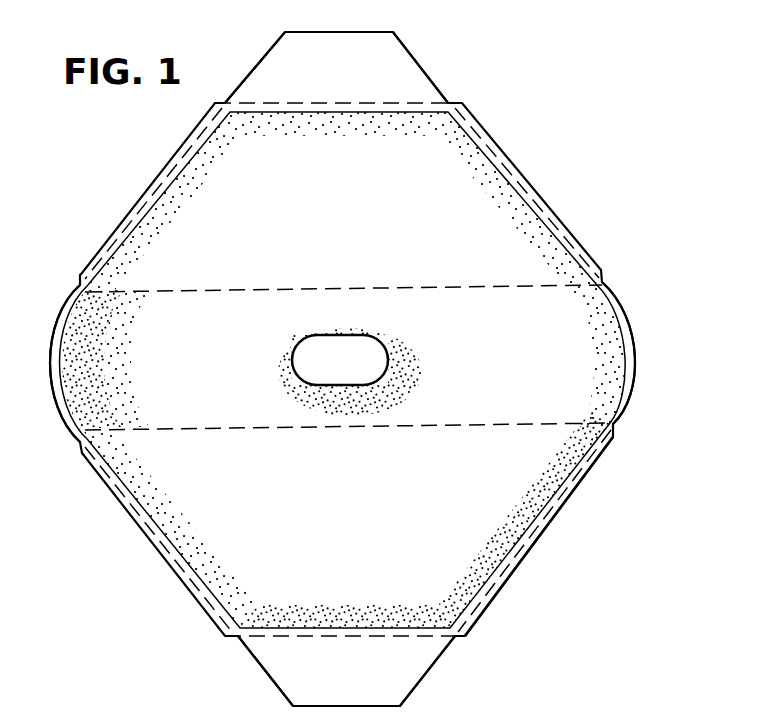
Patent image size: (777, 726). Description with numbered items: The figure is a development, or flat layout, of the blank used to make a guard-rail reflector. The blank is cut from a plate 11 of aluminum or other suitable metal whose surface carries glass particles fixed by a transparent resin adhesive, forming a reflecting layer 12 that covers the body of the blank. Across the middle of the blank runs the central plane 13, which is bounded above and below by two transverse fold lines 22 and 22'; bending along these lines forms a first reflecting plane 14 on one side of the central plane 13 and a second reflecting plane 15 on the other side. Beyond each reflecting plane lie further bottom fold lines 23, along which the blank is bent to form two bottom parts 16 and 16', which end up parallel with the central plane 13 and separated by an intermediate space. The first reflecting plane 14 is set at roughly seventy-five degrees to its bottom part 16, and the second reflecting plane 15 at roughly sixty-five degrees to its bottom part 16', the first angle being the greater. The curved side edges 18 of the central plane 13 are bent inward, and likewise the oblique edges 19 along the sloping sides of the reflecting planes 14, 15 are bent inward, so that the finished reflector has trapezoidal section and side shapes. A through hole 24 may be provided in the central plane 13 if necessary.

The plate 11 is at (523, 156).
The reflecting layer 12 is at (449, 146).
The central plane 13 is at (424, 370).
The first reflecting plane 14 is at (424, 517).
The second reflecting plane 15 is at (422, 243).
The bottom part 16 is at (336, 67).
The bottom part 16' is at (346, 671).
The upper edge of central plane 18 is at (52, 363).
The oblique edge 19 is at (140, 202).
The fold line 22 is at (343, 311).
The fold line 22' is at (348, 406).
The bottom fold line 23 is at (333, 104).
The through hole 24 is at (327, 375).